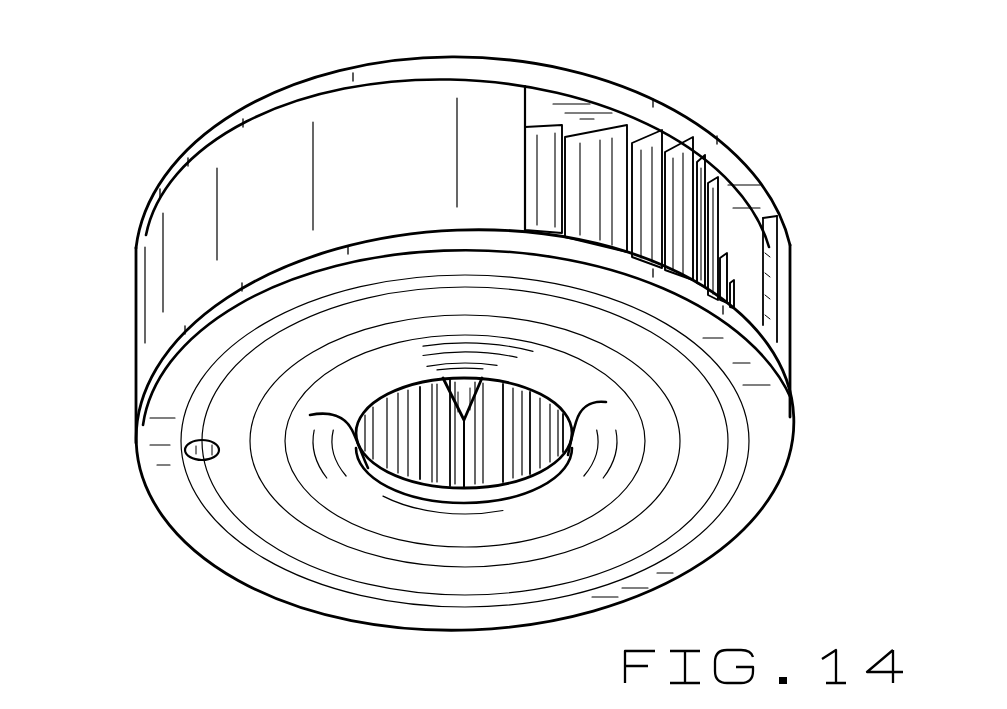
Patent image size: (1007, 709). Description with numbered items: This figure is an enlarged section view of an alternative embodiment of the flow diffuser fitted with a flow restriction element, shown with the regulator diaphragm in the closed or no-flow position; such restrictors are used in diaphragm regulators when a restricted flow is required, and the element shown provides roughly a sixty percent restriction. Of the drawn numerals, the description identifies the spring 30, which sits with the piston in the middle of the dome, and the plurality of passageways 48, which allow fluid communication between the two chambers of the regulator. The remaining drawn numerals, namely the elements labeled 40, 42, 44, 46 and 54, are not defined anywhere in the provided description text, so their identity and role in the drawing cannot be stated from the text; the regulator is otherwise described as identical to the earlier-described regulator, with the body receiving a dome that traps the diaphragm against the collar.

The spring 30 is at (171, 113).
The outer shroud ring 40 is at (457, 67).
The base plate 42 is at (238, 490).
The cylindrical side wall 44 is at (172, 263).
The blades 46 is at (735, 197).
The passageways 48 is at (510, 424).
The notch 54 is at (465, 398).